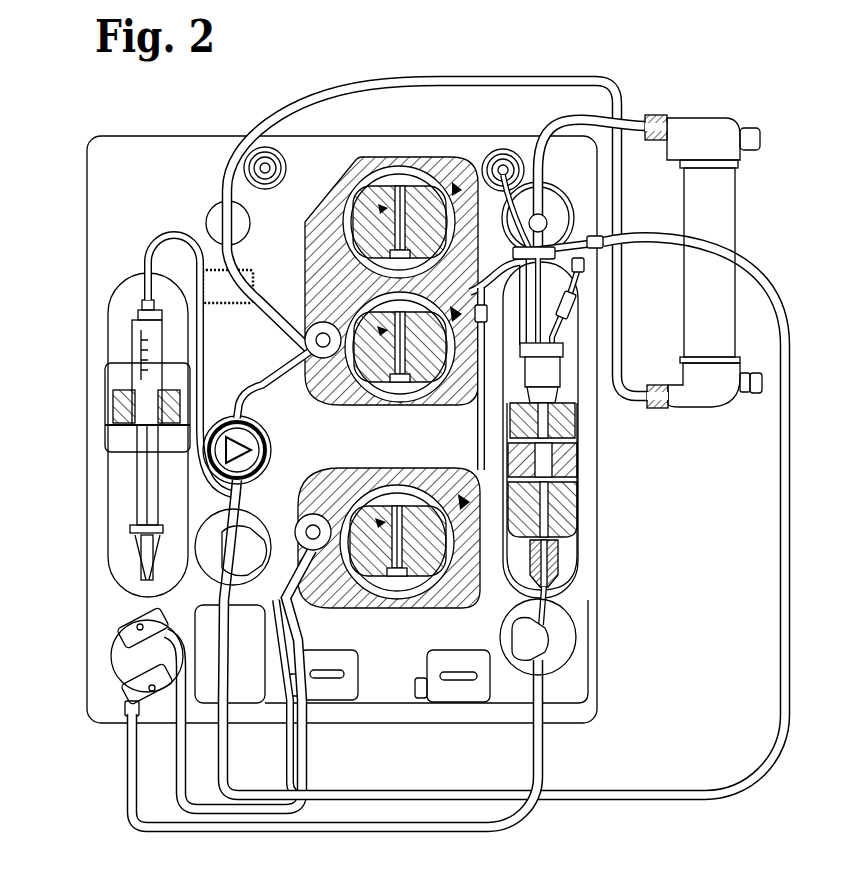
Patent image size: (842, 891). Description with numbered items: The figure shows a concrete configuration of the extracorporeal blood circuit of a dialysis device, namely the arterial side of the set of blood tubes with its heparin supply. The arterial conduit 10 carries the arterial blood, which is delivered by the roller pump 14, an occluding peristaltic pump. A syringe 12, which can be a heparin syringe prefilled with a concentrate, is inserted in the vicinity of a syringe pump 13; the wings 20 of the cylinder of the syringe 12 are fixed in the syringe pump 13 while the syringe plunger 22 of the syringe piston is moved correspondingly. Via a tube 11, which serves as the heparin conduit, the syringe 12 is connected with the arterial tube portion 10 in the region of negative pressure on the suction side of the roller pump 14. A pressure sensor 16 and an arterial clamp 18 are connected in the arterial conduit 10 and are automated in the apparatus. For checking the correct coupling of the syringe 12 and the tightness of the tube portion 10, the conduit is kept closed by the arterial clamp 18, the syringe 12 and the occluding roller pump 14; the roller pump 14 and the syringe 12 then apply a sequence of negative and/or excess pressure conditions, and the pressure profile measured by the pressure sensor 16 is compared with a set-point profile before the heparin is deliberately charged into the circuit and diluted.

The arterial conduit 10 is at (268, 392).
The tube 11 is at (204, 330).
The syringe 12 is at (120, 322).
The syringe pump 13 is at (205, 563).
The roller pump 14 is at (348, 332).
The pressure sensor 16 is at (268, 443).
The arterial clamp 18 is at (284, 600).
The wings 20 is at (108, 425).
The syringe plunger 22 is at (100, 512).